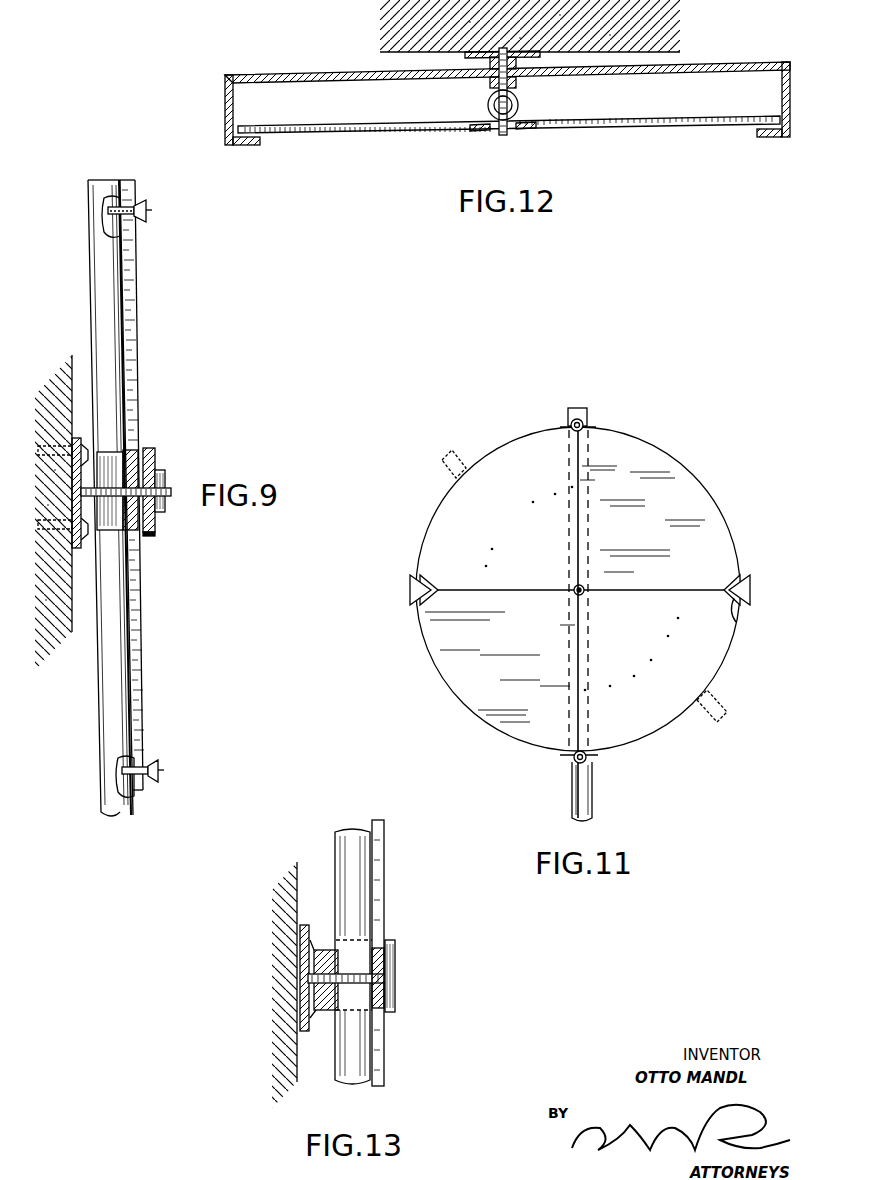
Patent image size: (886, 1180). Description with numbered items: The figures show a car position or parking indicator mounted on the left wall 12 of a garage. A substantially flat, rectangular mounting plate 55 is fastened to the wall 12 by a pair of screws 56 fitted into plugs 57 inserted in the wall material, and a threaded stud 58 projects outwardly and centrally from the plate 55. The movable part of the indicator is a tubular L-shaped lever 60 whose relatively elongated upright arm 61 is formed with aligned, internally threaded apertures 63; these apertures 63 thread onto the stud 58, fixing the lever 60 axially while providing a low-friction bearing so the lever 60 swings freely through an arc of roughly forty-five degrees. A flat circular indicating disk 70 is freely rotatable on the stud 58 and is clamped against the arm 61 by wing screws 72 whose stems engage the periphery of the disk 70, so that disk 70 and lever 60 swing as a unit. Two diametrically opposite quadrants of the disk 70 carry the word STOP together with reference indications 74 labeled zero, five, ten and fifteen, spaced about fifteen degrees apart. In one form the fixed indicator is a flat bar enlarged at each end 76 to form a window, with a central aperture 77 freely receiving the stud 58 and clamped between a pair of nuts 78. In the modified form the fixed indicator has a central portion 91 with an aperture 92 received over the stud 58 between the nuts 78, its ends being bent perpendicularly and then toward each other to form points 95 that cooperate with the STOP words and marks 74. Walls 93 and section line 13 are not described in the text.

In FIG. 12, the left wall 12 is at (565, 44).
In FIG. 9, the left wall 12 is at (72, 358).
In FIG. 11, the left wall 12 is at (397, 545).
In FIG. 13, the left wall 12 is at (298, 868).
In FIG. 11, the section line 13 is at (568, 561).
In FIG. 12, the mounting plate 55 is at (540, 54).
In FIG. 9, the mounting plate 55 is at (80, 550).
In FIG. 13, the mounting plate 55 is at (304, 924).
In FIG. 9, the screws 56 is at (80, 440).
In FIG. 9, the plugs 57 is at (46, 445).
In FIG. 12, the threaded stud 58 is at (506, 128).
In FIG. 9, the threaded stud 58 is at (170, 490).
In FIG. 11, the threaded stud 58 is at (584, 586).
In FIG. 13, the threaded stud 58 is at (388, 972).
In FIG. 9, the L-shaped lever 60 is at (62, 262).
In FIG. 11, the L-shaped lever 60 is at (608, 792).
In FIG. 12, the upright arm 61 is at (518, 106).
In FIG. 9, the upright arm 61 is at (117, 318).
In FIG. 11, the upright arm 61 is at (596, 812).
In FIG. 13, the upright arm 61 is at (368, 900).
In FIG. 9, the internally threaded apertures 63 is at (134, 450).
In FIG. 9, the indicating disk 70 is at (142, 278).
In FIG. 11, the indicating disk 70 is at (712, 517).
In FIG. 13, the indicating disk 70 is at (388, 864).
In FIG. 9, the wing screws 72 is at (138, 198).
In FIG. 11, the reference indications 74 is at (510, 518).
In FIG. 12, the enlarged end 76 is at (486, 60).
In FIG. 9, the enlarged end 76 is at (154, 452).
In FIG. 9, the central aperture 77 is at (160, 535).
In FIG. 12, the nuts 78 is at (518, 84).
In FIG. 9, the nuts 78 is at (166, 512).
In FIG. 13, the nuts 78 is at (318, 952).
In FIG. 12, the central portion 91 is at (322, 74).
In FIG. 13, the central portion 91 is at (324, 1012).
In FIG. 12, the aperture 92 is at (494, 80).
In FIG. 13, the aperture 92 is at (318, 990).
In FIG. 12, the end wall 93 is at (784, 92).
In FIG. 12, the points 95 is at (250, 145).
In FIG. 11, the points 95 is at (424, 582).
In FIG. 13, the points 95 is at (396, 977).